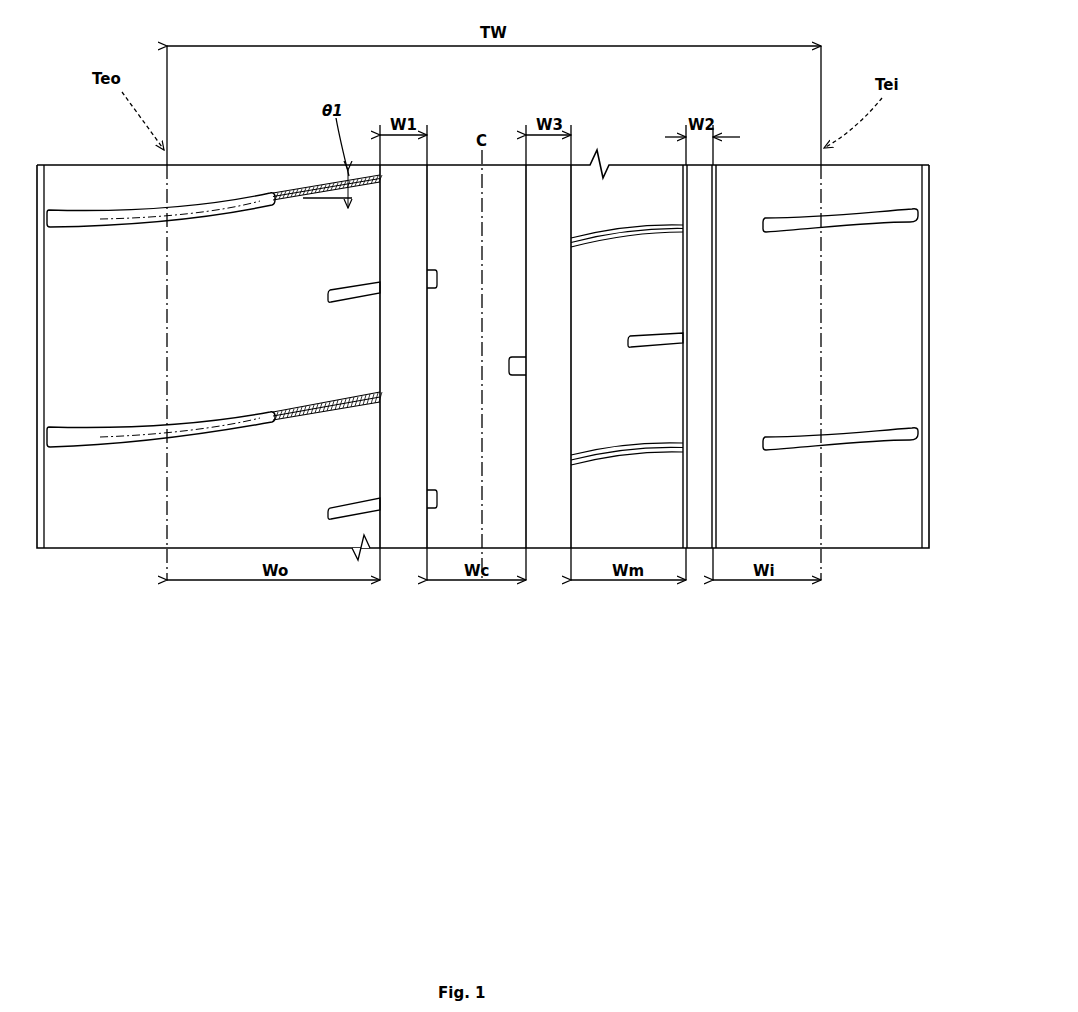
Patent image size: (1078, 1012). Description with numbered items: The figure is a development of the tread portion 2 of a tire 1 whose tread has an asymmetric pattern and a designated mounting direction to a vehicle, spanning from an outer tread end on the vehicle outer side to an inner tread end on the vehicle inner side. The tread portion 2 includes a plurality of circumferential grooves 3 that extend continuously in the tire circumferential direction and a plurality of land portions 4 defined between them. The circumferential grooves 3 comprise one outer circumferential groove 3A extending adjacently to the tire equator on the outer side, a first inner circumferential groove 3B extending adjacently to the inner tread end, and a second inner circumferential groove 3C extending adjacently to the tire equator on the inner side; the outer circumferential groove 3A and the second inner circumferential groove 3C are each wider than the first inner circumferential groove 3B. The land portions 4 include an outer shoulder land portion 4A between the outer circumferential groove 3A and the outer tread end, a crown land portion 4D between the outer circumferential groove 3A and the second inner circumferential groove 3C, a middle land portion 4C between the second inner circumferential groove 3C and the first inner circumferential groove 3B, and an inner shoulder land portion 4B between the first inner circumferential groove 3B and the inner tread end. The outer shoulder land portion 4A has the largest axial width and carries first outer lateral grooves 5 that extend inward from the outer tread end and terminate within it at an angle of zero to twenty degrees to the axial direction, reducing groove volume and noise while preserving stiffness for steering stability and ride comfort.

The tire 1 is at (888, 58).
The tread portion 2 is at (748, 135).
The circumferential grooves 3 is at (678, 92).
The outer circumferential groove 3A is at (415, 210).
The first inner circumferential groove 3B is at (700, 212).
The second inner circumferential groove 3C is at (557, 205).
The land portions 4 is at (865, 605).
The outer shoulder land portion 4A is at (367, 468).
The inner shoulder land portion 4B is at (805, 500).
The middle land portion 4C is at (667, 508).
The crown land portion 4D is at (512, 510).
The first outer lateral grooves 5 is at (205, 210).